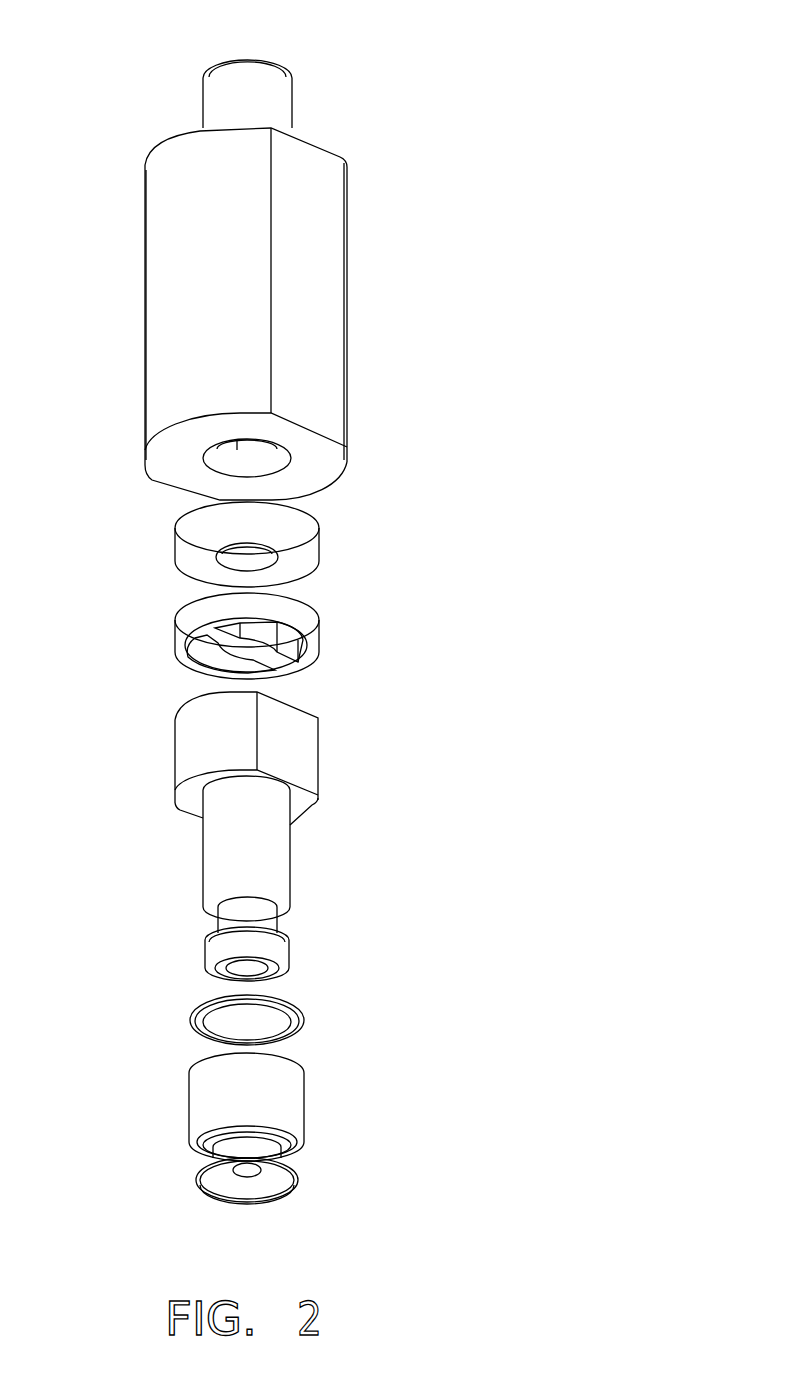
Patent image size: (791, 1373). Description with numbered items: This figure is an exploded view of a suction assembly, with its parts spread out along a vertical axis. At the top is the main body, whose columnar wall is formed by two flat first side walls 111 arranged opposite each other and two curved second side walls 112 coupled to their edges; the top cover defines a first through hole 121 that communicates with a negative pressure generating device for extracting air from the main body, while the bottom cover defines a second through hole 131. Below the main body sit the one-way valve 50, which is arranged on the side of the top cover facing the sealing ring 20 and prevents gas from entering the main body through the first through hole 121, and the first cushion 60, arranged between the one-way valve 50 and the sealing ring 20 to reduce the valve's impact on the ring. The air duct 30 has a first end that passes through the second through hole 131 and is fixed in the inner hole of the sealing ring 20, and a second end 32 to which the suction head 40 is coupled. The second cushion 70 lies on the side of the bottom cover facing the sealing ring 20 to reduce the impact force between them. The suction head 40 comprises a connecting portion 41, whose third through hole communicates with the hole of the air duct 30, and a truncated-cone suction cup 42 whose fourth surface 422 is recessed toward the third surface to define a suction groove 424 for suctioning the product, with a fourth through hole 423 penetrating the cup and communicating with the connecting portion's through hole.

The first side wall 111 is at (335, 243).
The second side wall 112 is at (165, 287).
The first through hole 121 is at (253, 58).
The second through hole 131 is at (233, 460).
The one-way valve 50 is at (307, 528).
The first cushion 60 is at (310, 620).
The sealing ring 20 is at (193, 749).
The air duct 30 is at (272, 855).
The second end 32 is at (285, 949).
The second cushion 70 is at (298, 1020).
The suction head 40 is at (247, 1149).
The connecting portion 41 is at (200, 1100).
The suction cup 42 is at (273, 1155).
The fourth surface 422 is at (196, 1172).
The fourth through hole 423 is at (253, 1170).
The suction groove 424 is at (225, 1183).